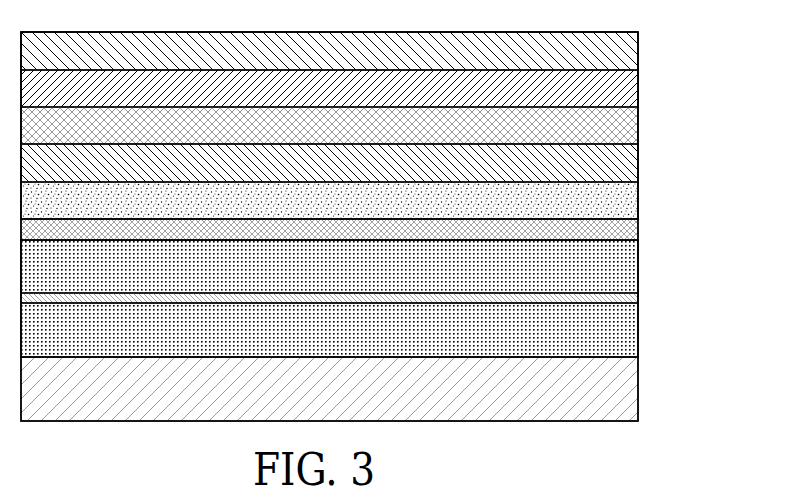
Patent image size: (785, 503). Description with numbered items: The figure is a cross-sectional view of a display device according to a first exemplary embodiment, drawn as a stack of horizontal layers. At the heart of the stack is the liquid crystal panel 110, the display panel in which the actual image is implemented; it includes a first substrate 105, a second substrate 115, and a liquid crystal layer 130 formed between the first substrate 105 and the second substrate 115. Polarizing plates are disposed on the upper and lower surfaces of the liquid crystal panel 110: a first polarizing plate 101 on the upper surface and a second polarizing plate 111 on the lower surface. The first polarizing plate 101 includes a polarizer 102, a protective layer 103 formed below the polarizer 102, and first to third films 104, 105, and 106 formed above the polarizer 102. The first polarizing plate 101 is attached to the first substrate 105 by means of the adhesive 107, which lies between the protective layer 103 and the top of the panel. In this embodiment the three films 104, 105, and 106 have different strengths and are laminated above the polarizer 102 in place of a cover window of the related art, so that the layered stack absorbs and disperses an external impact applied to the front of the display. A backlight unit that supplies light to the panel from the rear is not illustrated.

The first film 104 is at (638, 52).
The second film 105 is at (638, 88).
The third film 106 is at (638, 126).
The polarizer 102 is at (638, 162).
The protective layer 103 is at (638, 202).
The adhesive 107 is at (638, 230).
The liquid crystal layer 130 is at (638, 298).
The second substrate 115 is at (638, 332).
The second polarizing plate 111 is at (638, 388).
The first polarizing plate 101 is at (716, 45).
The liquid crystal panel 110 is at (716, 258).